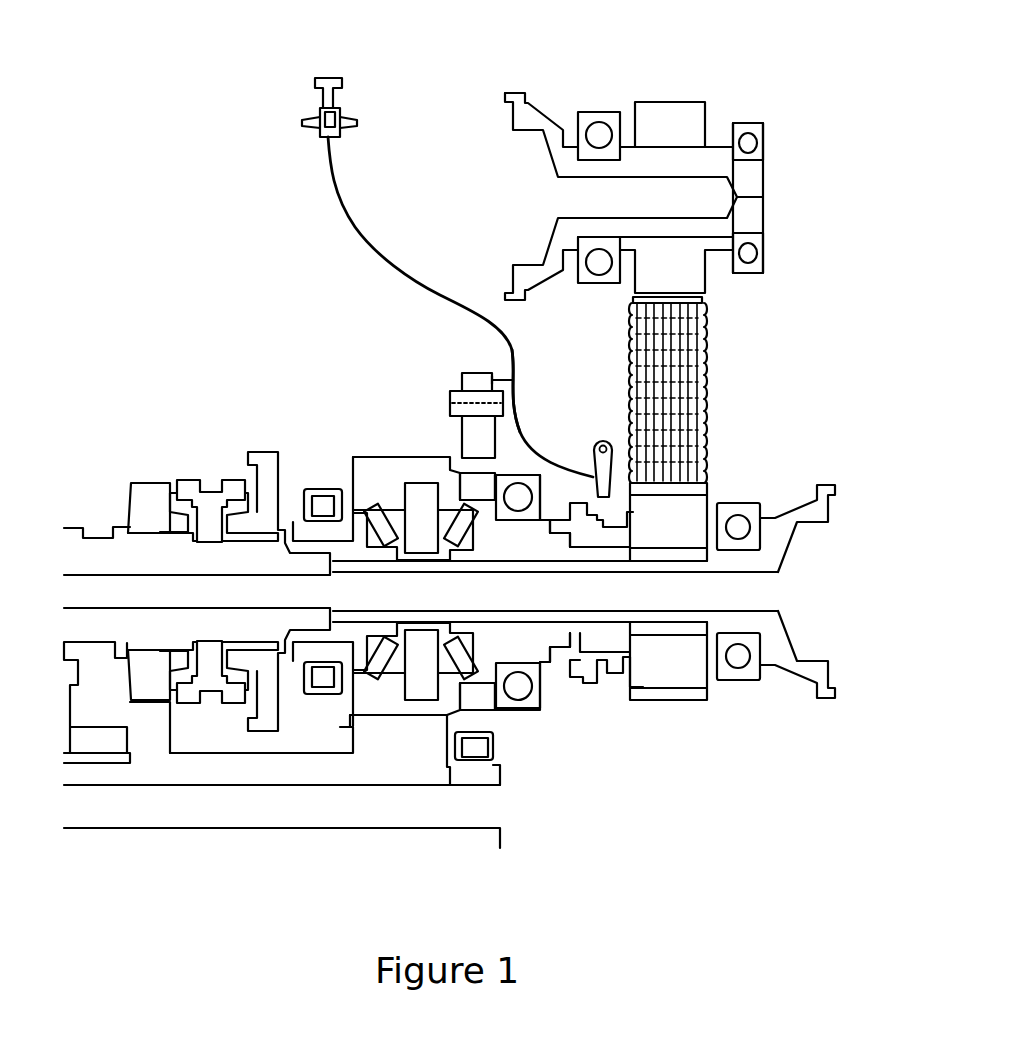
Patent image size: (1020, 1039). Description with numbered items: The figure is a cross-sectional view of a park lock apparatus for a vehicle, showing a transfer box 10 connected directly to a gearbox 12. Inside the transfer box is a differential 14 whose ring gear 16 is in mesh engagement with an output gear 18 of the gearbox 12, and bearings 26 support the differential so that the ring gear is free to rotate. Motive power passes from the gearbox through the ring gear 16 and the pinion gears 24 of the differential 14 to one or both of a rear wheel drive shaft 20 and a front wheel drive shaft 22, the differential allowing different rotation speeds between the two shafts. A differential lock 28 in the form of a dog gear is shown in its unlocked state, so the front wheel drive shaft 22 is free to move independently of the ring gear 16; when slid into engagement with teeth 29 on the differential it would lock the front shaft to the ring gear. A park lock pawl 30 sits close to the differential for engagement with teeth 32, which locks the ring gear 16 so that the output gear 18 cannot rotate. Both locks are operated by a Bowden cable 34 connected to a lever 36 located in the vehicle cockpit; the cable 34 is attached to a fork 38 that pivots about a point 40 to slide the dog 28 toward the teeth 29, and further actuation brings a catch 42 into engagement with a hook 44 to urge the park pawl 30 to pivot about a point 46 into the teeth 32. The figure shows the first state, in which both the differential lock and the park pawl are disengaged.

The transfer box 10 is at (340, 386).
The gearbox 12 is at (147, 450).
The differential 14 is at (400, 445).
The ring gear 16 is at (436, 715).
The output gear 18 is at (372, 722).
The rear wheel drive shaft 20 is at (665, 574).
The front wheel drive shaft 22 is at (668, 553).
The pinion gears 24 is at (442, 515).
The bearings 26 is at (323, 498).
The differential lock 28 is at (582, 675).
The teeth 29 is at (563, 640).
The park lock pawl 30 is at (478, 380).
The teeth 32 is at (485, 485).
The Bowden cable 34 is at (355, 225).
The lever 36 is at (324, 76).
The fork 38 is at (604, 470).
The point 40 is at (606, 448).
The catch 42 is at (516, 405).
The hook 44 is at (500, 378).
The point 46 is at (452, 402).